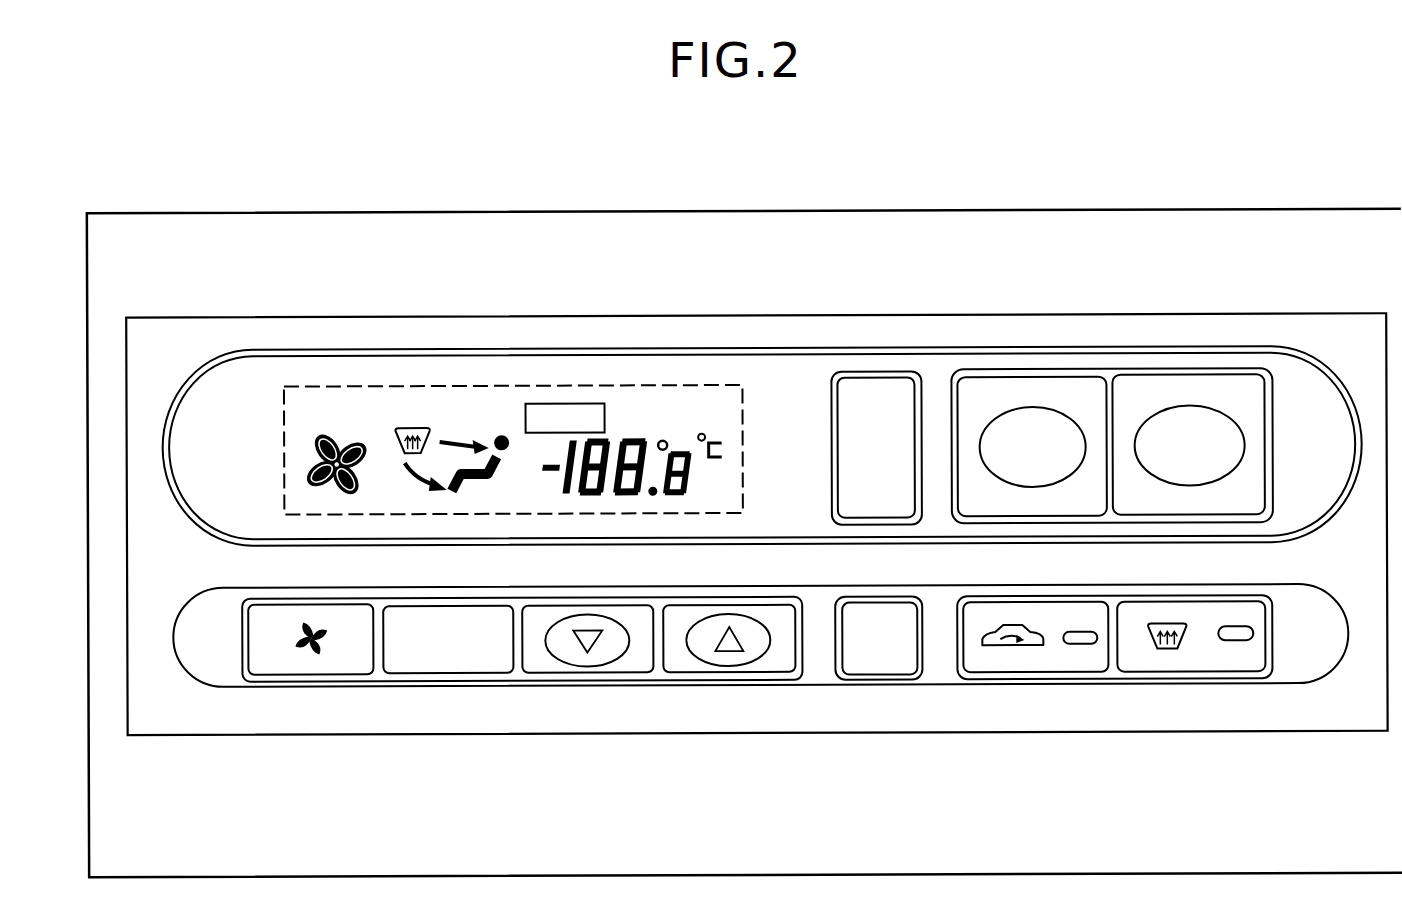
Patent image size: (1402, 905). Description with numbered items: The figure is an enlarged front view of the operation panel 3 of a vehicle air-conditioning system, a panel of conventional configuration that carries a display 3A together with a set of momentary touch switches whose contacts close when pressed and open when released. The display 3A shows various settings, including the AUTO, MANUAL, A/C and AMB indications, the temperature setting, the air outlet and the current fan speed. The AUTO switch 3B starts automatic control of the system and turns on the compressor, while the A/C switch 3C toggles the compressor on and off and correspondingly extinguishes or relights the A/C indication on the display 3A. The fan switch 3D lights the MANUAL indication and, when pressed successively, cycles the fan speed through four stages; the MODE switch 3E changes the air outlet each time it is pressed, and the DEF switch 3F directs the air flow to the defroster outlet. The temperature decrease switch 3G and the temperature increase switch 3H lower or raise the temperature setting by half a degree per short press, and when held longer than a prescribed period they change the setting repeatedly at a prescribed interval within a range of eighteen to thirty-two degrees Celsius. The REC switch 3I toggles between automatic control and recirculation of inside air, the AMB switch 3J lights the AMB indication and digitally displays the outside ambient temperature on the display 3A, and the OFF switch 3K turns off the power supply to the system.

The operation panel 3 is at (744, 206).
The display 3A is at (515, 385).
The AUTO switch 3B is at (1187, 374).
The A/C switch 3C is at (1036, 378).
The fan switch 3D is at (313, 675).
The MODE switch 3E is at (458, 673).
The DEF switch 3F is at (1200, 666).
The temperature decrease switch 3G is at (597, 673).
The temperature increase switch 3H is at (730, 673).
The REC switch 3I is at (1043, 673).
The AMB switch 3J is at (882, 675).
The OFF switch 3K is at (870, 374).